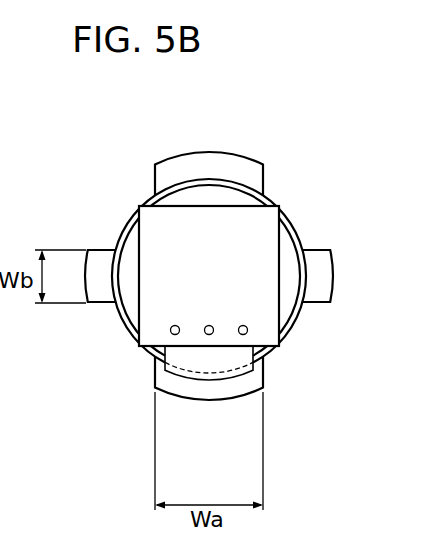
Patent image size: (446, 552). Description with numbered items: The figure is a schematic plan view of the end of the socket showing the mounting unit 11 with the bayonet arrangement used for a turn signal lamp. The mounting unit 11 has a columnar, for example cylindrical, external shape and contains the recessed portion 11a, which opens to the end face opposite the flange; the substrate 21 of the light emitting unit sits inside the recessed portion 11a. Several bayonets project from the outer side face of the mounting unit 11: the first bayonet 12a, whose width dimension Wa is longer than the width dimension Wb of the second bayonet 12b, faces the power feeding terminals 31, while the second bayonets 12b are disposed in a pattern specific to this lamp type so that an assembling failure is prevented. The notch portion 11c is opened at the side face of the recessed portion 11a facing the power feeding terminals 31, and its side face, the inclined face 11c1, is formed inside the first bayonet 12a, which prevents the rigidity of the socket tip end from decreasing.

The mounting unit 11 is at (128, 226).
The recessed portion 11a is at (126, 277).
The notch portion 11c is at (195, 377).
The inclined face 11c1 is at (226, 372).
The first bayonet 12a is at (208, 163).
The second bayonet 12b is at (320, 277).
The substrate 21 is at (271, 243).
The power feeding terminal 31 is at (247, 330).